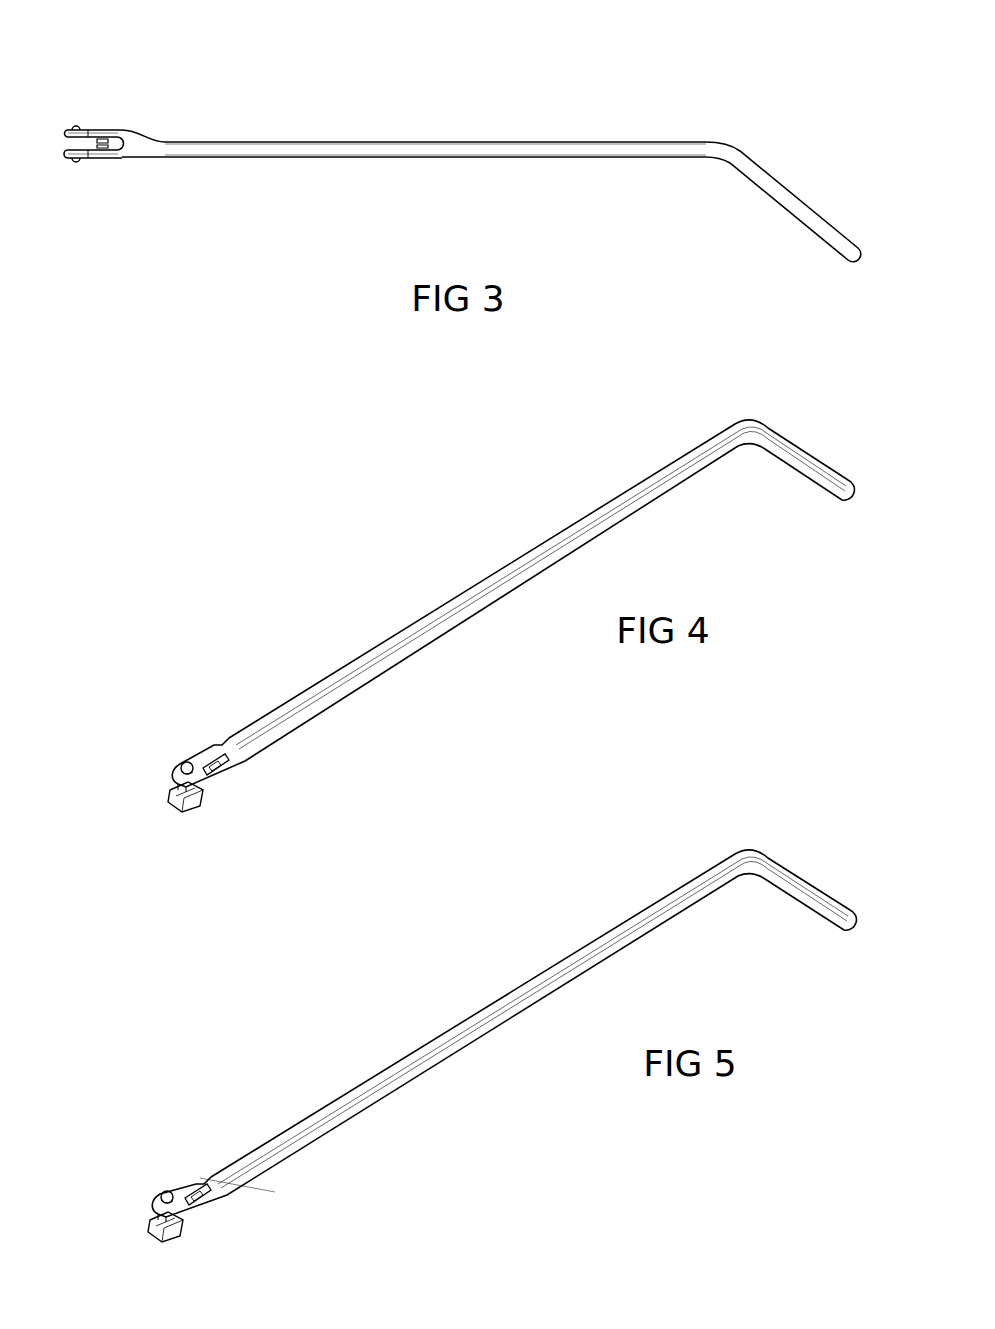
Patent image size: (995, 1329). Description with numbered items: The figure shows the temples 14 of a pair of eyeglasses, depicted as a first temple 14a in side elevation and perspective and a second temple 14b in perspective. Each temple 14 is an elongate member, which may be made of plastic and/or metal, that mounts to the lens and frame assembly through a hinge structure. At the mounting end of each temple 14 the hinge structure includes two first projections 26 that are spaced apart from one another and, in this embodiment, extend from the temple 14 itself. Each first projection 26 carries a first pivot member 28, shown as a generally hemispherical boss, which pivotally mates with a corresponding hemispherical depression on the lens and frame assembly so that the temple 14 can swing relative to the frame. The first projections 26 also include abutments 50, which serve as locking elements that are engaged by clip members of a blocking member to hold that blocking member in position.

In FIG. 3, the temple 14 is at (298, 141).
In FIG. 4, the temple 14 is at (408, 637).
In FIG. 5, the temple 14 is at (498, 1017).
In FIG. 3, the first temple 14a is at (491, 149).
In FIG. 4, the first temple 14a is at (541, 590).
In FIG. 5, the second temple 14b is at (528, 1022).
In FIG. 3, the first projection 26 is at (100, 130).
In FIG. 4, the first projection 26 is at (214, 757).
In FIG. 5, the first projection 26 is at (195, 1190).
In FIG. 3, the first pivot member 28 is at (75, 128).
In FIG. 4, the first pivot member 28 is at (181, 764).
In FIG. 5, the first pivot member 28 is at (162, 1193).
In FIG. 3, the abutment 50 is at (120, 133).
In FIG. 4, the abutment 50 is at (207, 772).
In FIG. 5, the abutment 50 is at (200, 1203).